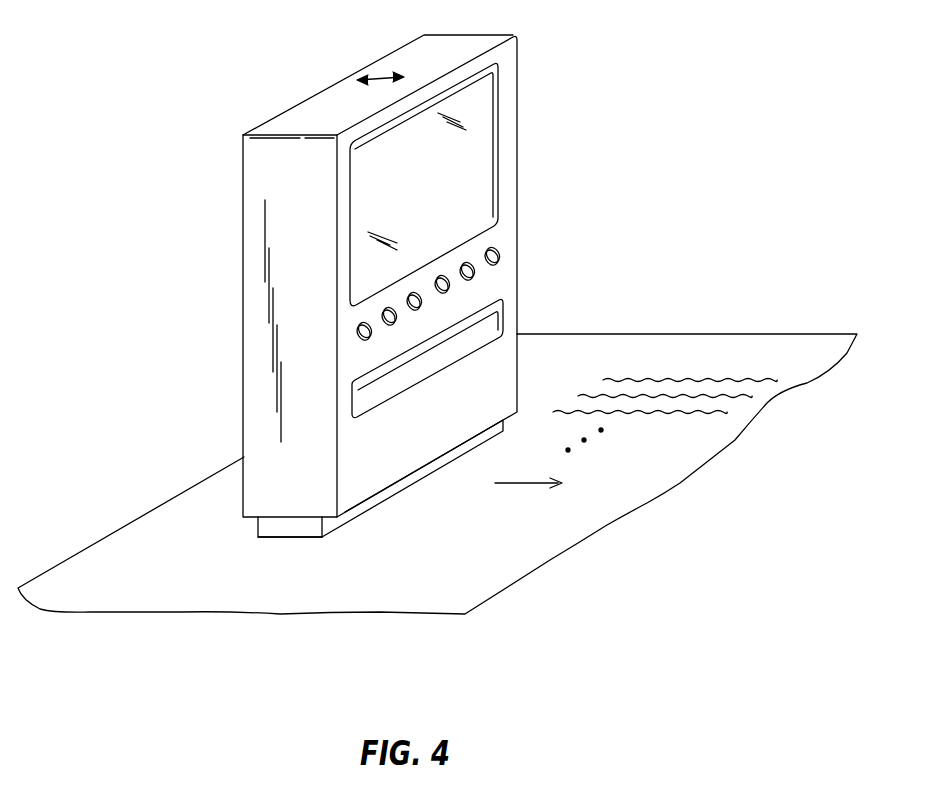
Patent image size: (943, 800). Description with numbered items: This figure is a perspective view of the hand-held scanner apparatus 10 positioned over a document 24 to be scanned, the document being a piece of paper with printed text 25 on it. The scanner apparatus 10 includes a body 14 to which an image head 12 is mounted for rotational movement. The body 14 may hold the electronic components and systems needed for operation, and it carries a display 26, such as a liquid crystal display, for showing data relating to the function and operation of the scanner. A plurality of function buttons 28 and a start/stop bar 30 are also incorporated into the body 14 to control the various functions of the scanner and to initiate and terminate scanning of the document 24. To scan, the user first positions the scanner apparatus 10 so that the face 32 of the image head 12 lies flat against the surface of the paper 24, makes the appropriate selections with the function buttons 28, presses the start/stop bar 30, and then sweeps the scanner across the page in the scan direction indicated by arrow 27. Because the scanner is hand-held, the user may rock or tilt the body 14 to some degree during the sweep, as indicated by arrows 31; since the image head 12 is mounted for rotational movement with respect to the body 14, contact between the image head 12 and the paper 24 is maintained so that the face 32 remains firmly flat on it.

The hand-held scanner apparatus 10 is at (201, 72).
The image head 12 is at (273, 543).
The body 14 is at (517, 70).
The document 24 is at (780, 334).
The printed text 25 is at (775, 378).
The display 26 is at (477, 143).
The arrow 27 is at (527, 484).
The function buttons 28 is at (478, 275).
The start/stop bar 30 is at (403, 377).
The arrows 31 is at (374, 76).
The face 32 is at (305, 539).